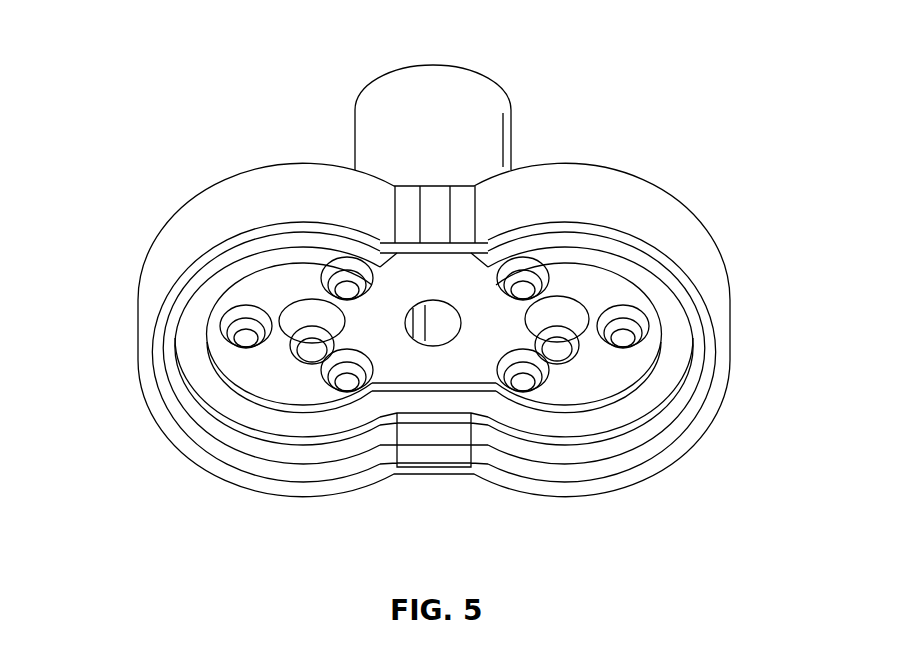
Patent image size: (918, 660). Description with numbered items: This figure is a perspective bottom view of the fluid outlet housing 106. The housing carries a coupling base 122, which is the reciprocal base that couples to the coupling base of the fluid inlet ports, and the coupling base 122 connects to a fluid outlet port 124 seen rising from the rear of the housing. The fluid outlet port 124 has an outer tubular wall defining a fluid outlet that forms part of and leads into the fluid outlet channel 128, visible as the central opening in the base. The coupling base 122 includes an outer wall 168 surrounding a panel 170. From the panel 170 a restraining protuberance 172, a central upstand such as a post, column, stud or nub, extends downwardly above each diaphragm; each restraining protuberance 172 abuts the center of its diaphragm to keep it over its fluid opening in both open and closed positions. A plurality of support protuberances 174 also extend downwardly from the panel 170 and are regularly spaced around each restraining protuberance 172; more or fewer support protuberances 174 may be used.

The fluid outlet housing 106 is at (151, 92).
The coupling base 122 is at (712, 240).
The fluid outlet port 124 is at (367, 101).
The fluid outlet channel 128 is at (436, 323).
The outer wall 168 is at (162, 237).
The panel 170 is at (283, 273).
The restraining protuberance 172 is at (560, 350).
The support protuberances 174 is at (347, 290).